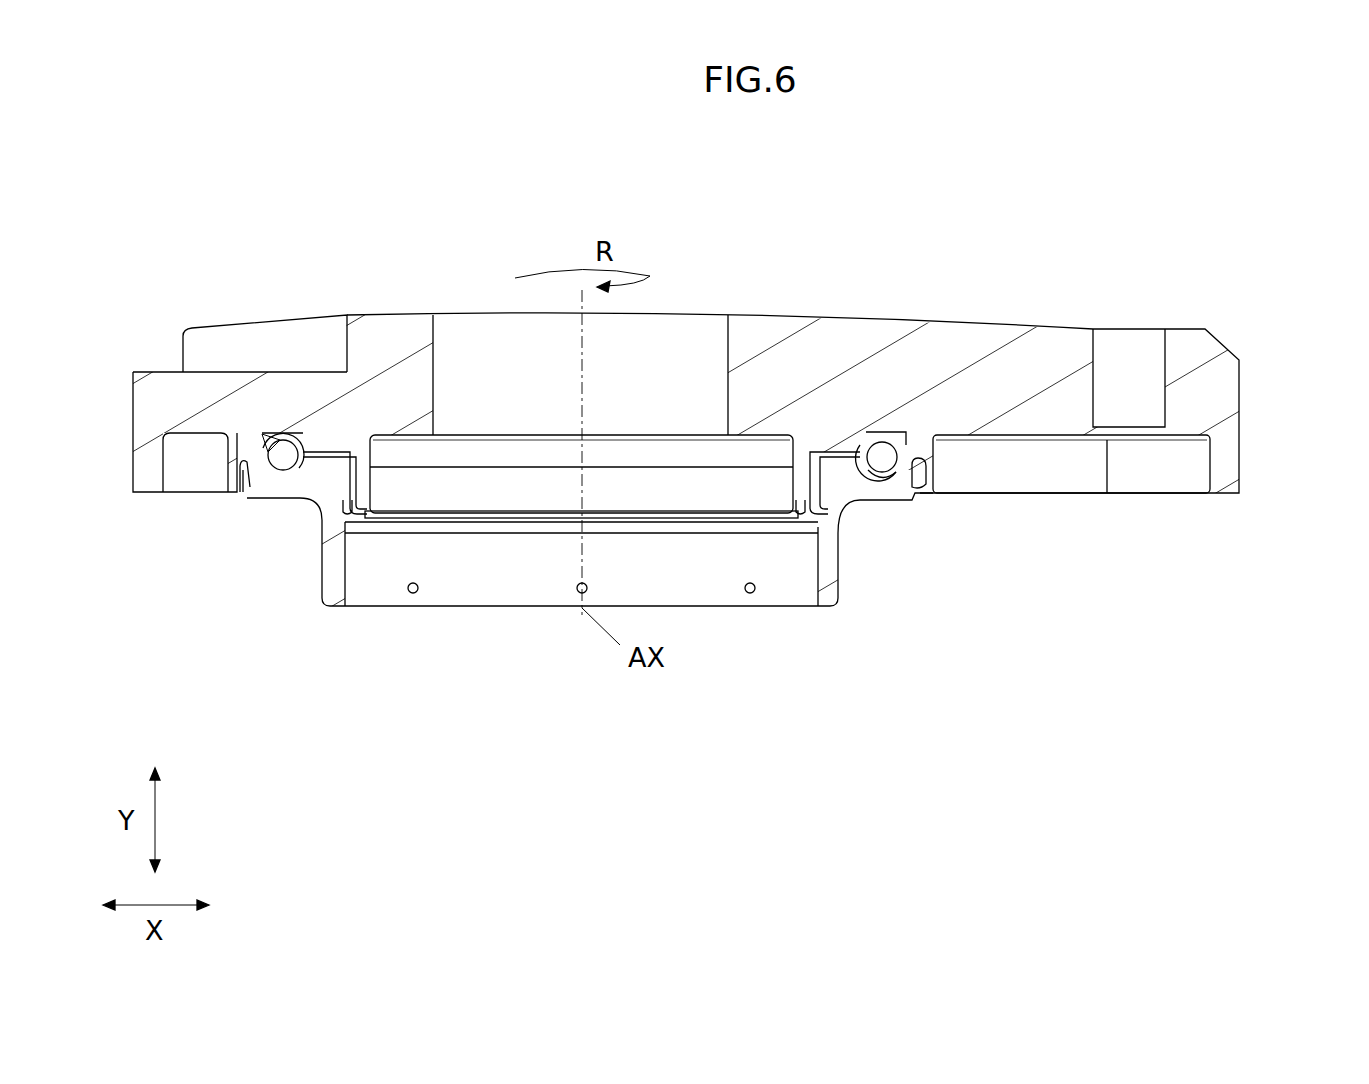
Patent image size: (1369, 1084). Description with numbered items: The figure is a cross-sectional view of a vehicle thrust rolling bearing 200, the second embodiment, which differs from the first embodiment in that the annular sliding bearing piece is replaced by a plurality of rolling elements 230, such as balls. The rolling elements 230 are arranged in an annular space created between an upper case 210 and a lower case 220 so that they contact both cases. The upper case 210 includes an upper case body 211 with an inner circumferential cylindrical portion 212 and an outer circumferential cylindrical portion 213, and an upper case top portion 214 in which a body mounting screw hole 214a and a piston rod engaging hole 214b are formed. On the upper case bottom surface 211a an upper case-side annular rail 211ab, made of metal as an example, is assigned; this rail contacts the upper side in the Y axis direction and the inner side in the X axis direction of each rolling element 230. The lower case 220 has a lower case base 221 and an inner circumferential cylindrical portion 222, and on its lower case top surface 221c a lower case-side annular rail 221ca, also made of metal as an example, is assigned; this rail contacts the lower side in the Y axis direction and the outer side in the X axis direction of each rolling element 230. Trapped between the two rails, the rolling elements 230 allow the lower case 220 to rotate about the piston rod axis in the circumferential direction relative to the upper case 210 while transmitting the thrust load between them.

The vehicle thrust rolling bearing 200 is at (114, 268).
The upper case 210 is at (1352, 223).
The upper case body 211 is at (955, 360).
The upper case bottom surface 211a is at (264, 433).
The upper case-side annular rail 211ab is at (868, 437).
The inner circumferential cylindrical portion 212 is at (800, 505).
The outer circumferential cylindrical portion 213 is at (935, 462).
The upper case top portion 214 is at (1085, 348).
The body mounting screw hole 214a is at (1157, 362).
The piston rod engaging hole 214b is at (654, 356).
The lower case 220 is at (1058, 668).
The lower case base 221 is at (870, 492).
The lower case top surface 221c is at (287, 465).
The lower case-side annular rail 221ca is at (877, 470).
The inner circumferential cylindrical portion 222 is at (832, 582).
The rolling elements 230 is at (925, 470).